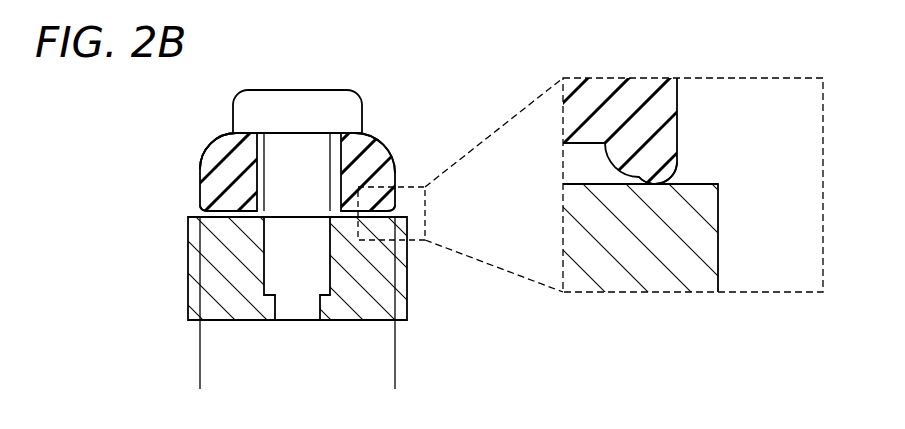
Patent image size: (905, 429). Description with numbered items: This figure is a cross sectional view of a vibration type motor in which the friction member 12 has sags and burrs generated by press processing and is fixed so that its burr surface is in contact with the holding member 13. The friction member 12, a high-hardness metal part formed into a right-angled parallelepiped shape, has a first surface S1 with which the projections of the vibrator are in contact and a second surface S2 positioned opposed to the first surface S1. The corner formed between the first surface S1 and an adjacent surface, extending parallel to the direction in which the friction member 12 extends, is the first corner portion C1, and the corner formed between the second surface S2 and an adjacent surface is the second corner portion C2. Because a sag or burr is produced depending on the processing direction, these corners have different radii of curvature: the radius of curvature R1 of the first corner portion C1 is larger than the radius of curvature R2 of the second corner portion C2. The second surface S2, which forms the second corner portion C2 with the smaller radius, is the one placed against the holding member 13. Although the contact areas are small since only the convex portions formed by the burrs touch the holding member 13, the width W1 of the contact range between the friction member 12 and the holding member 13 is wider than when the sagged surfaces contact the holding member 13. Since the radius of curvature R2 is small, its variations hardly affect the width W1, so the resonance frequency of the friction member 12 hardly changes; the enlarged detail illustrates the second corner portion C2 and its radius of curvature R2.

The friction member 12 is at (200, 177).
The holding member 13 is at (215, 286).
The first surface S1 is at (347, 133).
The second surface S2 is at (232, 211).
The first corner portion C1 is at (213, 160).
The second corner portion C2 is at (198, 211).
The radius of curvature of the first corner portion R1 is at (238, 171).
The radius of curvature of the second corner portion R2 is at (650, 158).
The width of contact range W1 is at (394, 383).